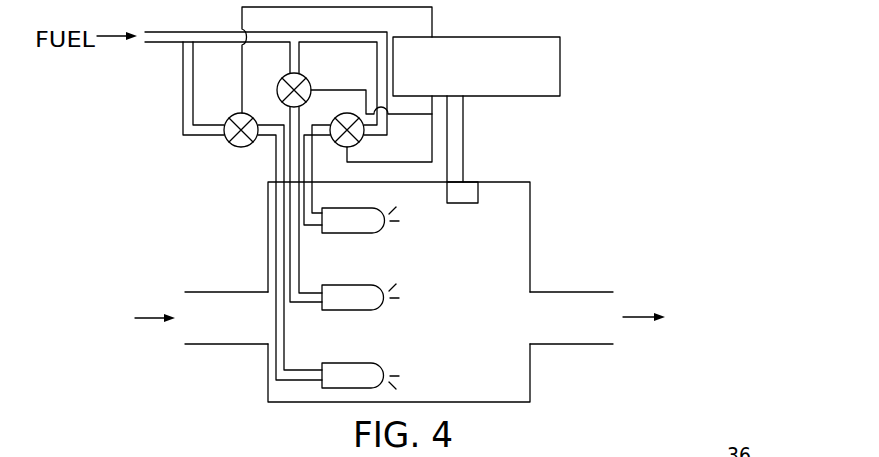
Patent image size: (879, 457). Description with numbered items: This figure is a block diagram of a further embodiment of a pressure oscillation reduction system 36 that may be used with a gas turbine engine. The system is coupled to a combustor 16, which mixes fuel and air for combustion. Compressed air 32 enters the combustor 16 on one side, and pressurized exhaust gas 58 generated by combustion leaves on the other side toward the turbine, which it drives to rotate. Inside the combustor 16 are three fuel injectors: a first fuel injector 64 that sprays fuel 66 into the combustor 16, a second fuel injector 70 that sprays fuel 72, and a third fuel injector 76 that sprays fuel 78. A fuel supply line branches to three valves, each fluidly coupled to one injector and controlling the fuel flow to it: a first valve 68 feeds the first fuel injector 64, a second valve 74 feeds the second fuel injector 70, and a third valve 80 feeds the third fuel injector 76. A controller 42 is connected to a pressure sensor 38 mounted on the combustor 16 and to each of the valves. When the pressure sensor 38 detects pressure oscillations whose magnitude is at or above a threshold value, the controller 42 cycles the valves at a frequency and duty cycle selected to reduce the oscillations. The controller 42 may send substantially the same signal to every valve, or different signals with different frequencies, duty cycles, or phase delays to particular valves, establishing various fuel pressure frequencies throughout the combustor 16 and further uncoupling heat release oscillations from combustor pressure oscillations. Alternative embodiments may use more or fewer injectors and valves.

The combustor 16 is at (530, 236).
The compressed air 32 is at (152, 315).
The pressure oscillation reduction system 36 is at (632, 55).
The pressure sensor 38 is at (470, 204).
The controller 42 is at (561, 66).
The pressurized exhaust gas 58 is at (640, 315).
The first fuel injector 64 is at (357, 234).
The fuel 66 is at (395, 229).
The first valve 68 is at (348, 113).
The second fuel injector 70 is at (332, 284).
The fuel 72 is at (396, 306).
The second valve 74 is at (277, 90).
The third fuel injector 76 is at (333, 362).
The fuel 78 is at (396, 367).
The third valve 80 is at (241, 148).